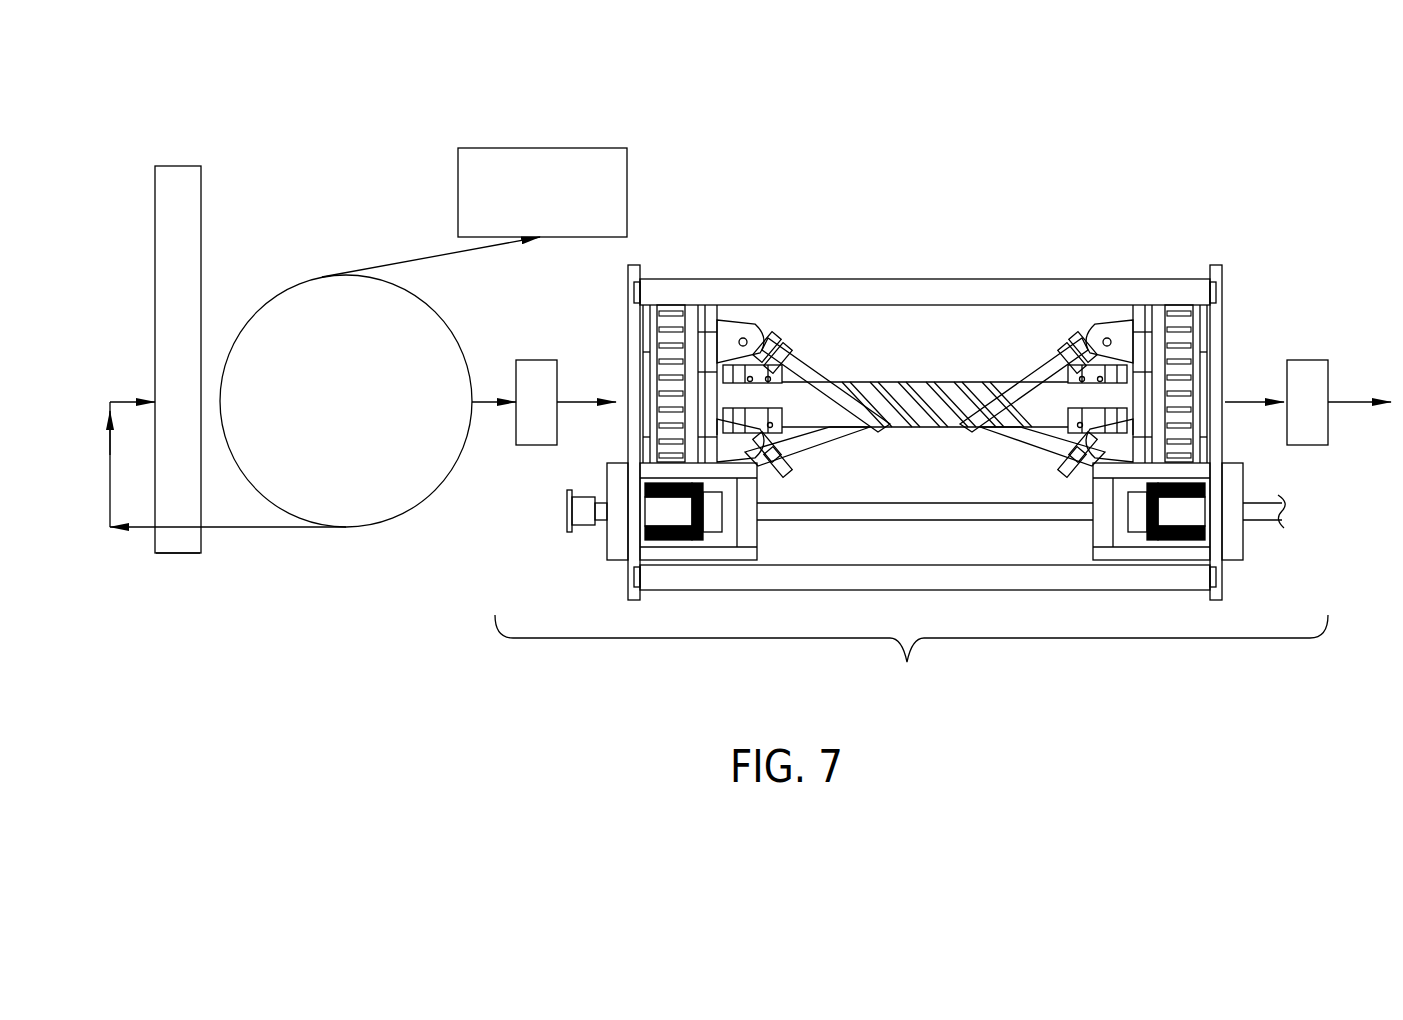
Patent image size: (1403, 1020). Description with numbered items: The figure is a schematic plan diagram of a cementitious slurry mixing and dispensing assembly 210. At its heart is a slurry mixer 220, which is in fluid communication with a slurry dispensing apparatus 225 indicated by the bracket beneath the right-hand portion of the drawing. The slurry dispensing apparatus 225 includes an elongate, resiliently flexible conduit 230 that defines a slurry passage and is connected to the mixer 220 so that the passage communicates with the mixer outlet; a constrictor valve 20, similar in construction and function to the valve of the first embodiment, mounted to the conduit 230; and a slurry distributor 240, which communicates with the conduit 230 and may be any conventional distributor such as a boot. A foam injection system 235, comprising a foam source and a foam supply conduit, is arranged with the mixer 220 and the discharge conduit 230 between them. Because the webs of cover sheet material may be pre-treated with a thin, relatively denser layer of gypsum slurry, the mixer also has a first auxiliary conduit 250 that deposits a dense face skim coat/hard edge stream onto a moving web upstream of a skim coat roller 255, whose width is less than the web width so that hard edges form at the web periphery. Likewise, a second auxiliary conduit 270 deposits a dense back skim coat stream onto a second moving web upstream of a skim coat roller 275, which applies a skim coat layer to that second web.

The constrictor valve 20 is at (868, 267).
The cementitious slurry mixing and dispensing assembly 210 is at (202, 142).
The slurry mixer 220 is at (305, 318).
The slurry dispensing apparatus 225 is at (911, 654).
The conduit 230 is at (582, 402).
The foam injection system 235 is at (537, 360).
The slurry distributor 240 is at (1308, 377).
The first auxiliary conduit 250 is at (252, 527).
The skim coat roller 255 is at (173, 540).
The second auxiliary conduit 270 is at (413, 260).
The skim coat roller 275 is at (545, 183).